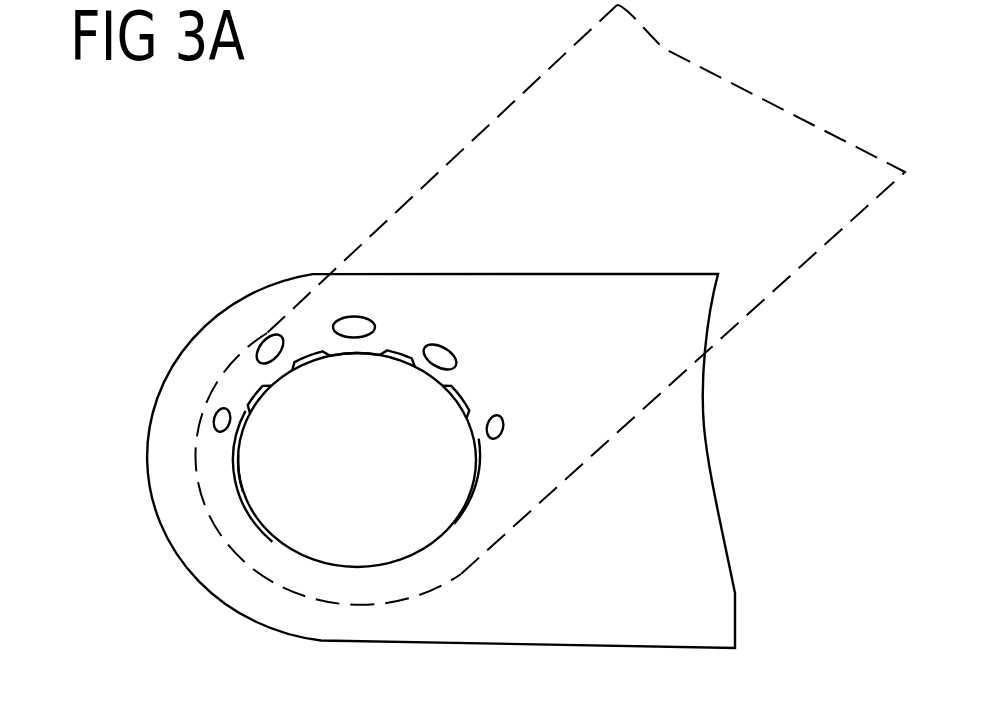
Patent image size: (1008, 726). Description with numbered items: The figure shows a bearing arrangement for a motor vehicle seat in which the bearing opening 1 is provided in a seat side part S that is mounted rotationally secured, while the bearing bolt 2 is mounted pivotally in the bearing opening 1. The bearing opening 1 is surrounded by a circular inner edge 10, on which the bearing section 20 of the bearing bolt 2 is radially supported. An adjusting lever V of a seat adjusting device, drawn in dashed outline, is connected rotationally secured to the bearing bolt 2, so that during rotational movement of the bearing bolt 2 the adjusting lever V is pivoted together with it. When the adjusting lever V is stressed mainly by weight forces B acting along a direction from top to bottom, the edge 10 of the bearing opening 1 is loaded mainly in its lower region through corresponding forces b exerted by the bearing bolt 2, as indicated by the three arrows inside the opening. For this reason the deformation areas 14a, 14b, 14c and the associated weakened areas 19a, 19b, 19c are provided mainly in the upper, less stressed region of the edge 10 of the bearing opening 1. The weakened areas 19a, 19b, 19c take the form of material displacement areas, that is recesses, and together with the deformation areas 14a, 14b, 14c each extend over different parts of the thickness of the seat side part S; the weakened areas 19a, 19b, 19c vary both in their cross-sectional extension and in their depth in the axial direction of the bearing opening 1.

The bearing opening 1 is at (480, 486).
The bearing bolt 2 is at (454, 524).
The edge 10 is at (298, 540).
The deformation area 14a is at (353, 348).
The deformation area 14b is at (422, 365).
The deformation area 14c is at (240, 424).
The weakened area 19a is at (352, 323).
The weakened area 19b is at (262, 344).
The weakened area 19c is at (216, 421).
The bearing section 20 is at (242, 492).
The seat side part S is at (158, 398).
The adjusting lever V is at (422, 207).
The weight forces B is at (605, 235).
The forces b is at (305, 478).